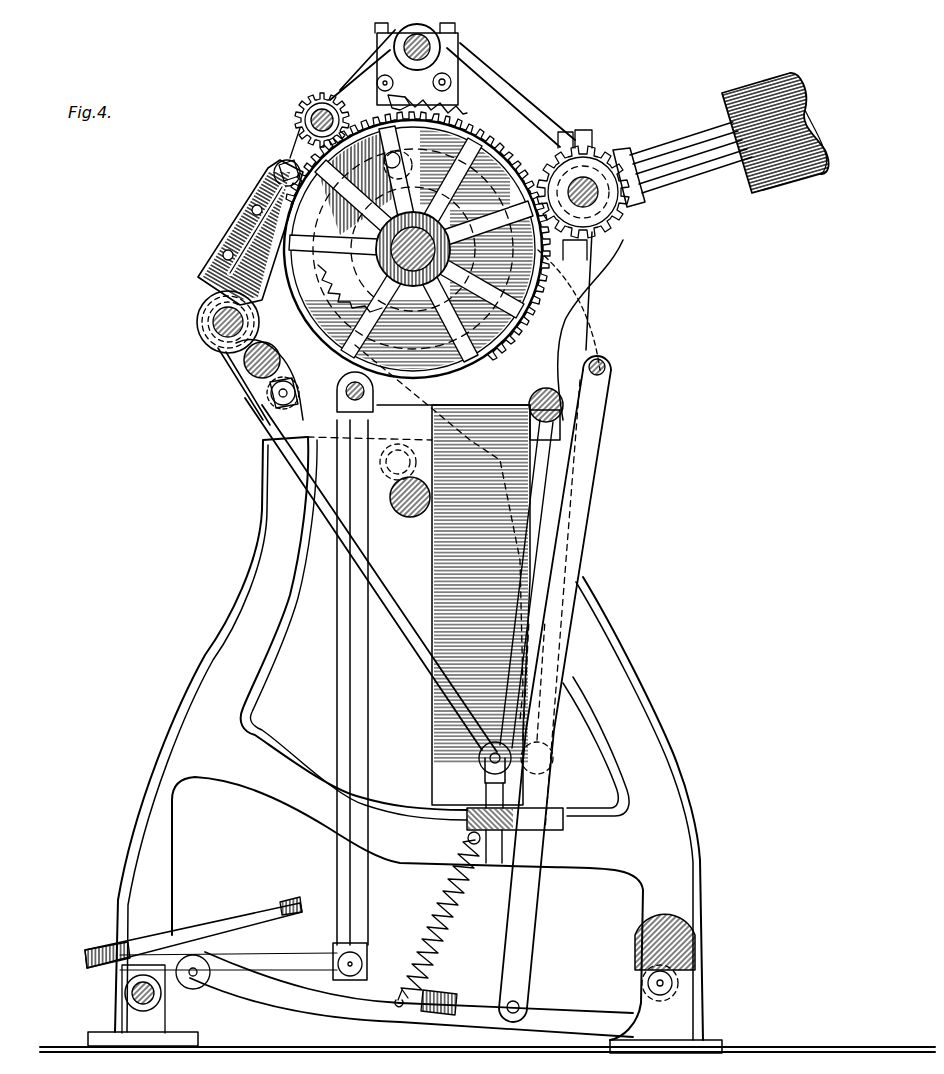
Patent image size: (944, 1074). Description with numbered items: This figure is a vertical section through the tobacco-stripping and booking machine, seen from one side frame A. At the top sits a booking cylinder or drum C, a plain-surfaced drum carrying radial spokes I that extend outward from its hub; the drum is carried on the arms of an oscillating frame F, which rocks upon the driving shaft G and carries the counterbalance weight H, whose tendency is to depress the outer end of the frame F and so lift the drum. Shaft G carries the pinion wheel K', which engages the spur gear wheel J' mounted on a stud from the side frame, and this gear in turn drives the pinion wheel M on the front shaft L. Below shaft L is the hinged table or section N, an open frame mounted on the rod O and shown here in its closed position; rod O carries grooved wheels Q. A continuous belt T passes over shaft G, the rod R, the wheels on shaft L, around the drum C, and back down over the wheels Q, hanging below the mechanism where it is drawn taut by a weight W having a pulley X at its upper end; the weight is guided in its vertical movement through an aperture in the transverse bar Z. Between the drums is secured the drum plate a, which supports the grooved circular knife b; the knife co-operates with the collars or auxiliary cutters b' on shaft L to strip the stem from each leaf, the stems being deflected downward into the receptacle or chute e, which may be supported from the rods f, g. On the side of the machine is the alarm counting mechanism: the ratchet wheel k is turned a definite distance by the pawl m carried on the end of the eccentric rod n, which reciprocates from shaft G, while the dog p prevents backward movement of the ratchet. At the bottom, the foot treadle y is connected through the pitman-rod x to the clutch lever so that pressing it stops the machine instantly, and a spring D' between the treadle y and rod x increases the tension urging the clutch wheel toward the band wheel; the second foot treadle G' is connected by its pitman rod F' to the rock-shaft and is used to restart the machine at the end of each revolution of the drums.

The side frame A is at (405, 642).
The booking cylinder or drum C is at (439, 532).
The spring D' is at (437, 923).
The frame F is at (688, 157).
The pitman rod F' is at (344, 676).
The driving shaft G is at (583, 195).
The foot treadle G' is at (329, 952).
The counterbalance weight H is at (775, 133).
The radial spokes I is at (418, 243).
The spur gear wheel J' is at (567, 310).
The pinion wheel K' is at (634, 189).
The shaft L is at (308, 118).
The pinion wheel M is at (312, 104).
The hinged table or section N is at (240, 242).
The rod O is at (212, 322).
The grooved wheels Q is at (222, 342).
The rod R is at (442, 47).
The continuous belt T is at (410, 391).
The weight W is at (488, 806).
The pulley X is at (514, 601).
The transverse bar Z is at (466, 818).
The drum plate a is at (413, 258).
The grooved circular knife b is at (398, 165).
The collar or auxiliary cutter b' is at (276, 157).
The receptacle or chute e is at (470, 605).
The rod f is at (532, 400).
The rod g is at (246, 365).
The ratchet wheel k is at (408, 204).
The pawl m is at (399, 77).
The eccentric rod n is at (395, 102).
The dog p is at (457, 87).
The pitman-rod x is at (555, 689).
The foot treadle y is at (390, 966).